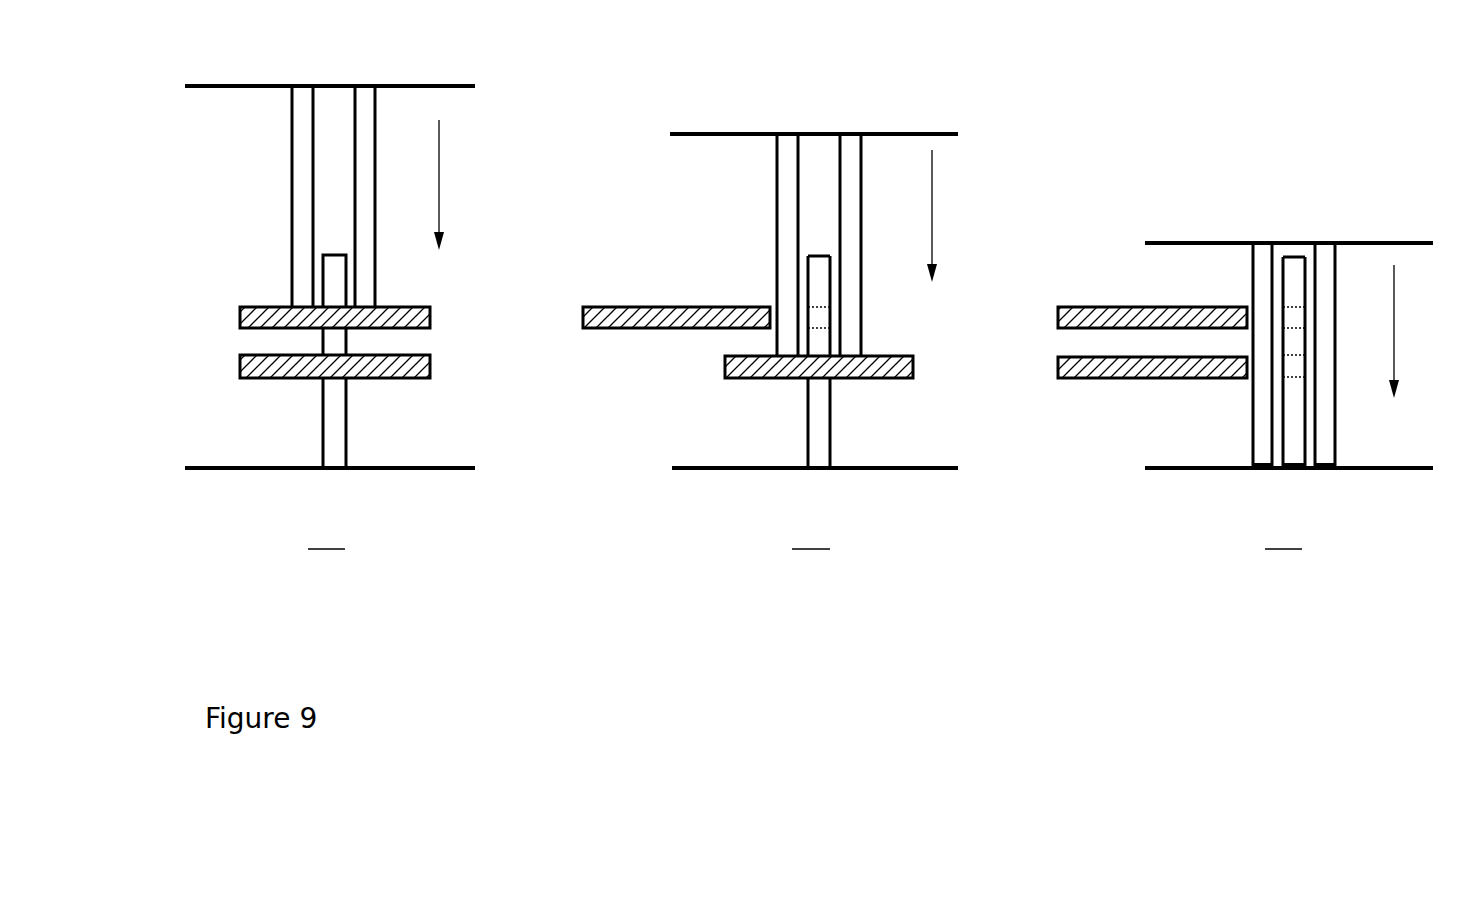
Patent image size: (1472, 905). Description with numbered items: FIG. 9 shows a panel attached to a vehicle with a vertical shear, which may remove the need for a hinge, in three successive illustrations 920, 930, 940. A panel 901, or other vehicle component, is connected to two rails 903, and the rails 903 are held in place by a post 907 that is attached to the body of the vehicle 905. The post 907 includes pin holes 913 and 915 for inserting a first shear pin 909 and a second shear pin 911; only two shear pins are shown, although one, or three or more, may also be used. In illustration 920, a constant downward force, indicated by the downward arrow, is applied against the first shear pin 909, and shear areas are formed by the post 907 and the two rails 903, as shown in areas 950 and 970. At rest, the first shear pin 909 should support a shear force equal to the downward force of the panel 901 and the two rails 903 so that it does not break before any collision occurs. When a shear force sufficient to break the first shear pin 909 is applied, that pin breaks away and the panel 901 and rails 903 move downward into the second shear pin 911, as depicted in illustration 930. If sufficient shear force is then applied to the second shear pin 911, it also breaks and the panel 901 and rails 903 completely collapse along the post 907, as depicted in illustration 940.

The panel 901 is at (185, 86).
The rails 903 is at (292, 195).
The body of the vehicle 905 is at (223, 470).
The post 907 is at (346, 433).
The first shear pin 909 is at (240, 323).
The second shear pin 911 is at (240, 372).
The pin hole 913 is at (822, 318).
The pin hole 915 is at (1298, 367).
The shear area 950 is at (313, 273).
The shear area 970 is at (355, 298).
The illustration 920 is at (326, 538).
The illustration 930 is at (811, 538).
The illustration 940 is at (1283, 538).